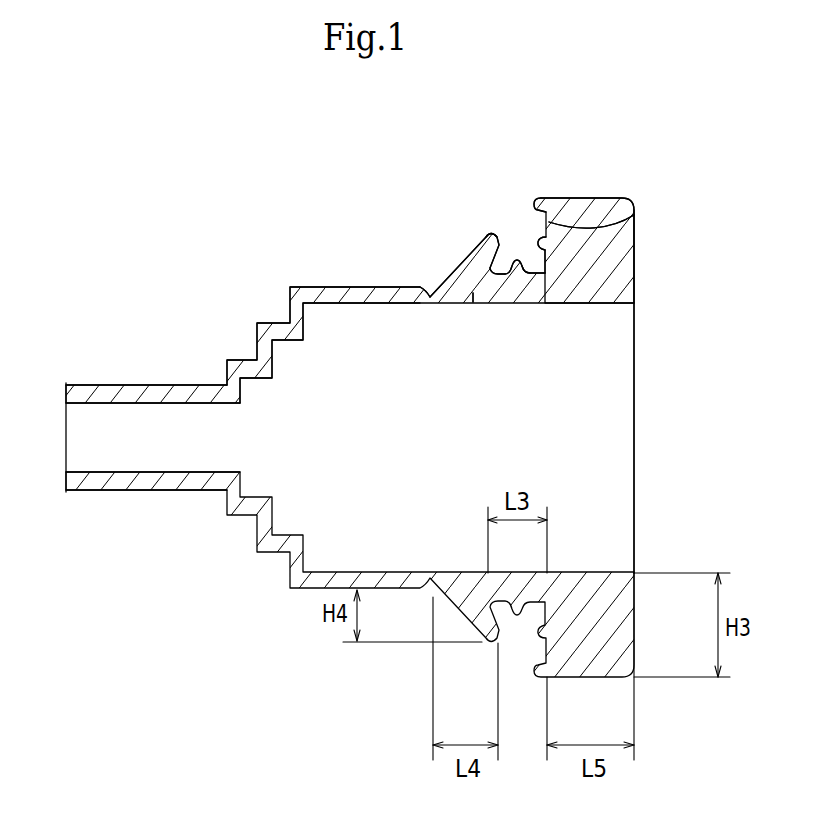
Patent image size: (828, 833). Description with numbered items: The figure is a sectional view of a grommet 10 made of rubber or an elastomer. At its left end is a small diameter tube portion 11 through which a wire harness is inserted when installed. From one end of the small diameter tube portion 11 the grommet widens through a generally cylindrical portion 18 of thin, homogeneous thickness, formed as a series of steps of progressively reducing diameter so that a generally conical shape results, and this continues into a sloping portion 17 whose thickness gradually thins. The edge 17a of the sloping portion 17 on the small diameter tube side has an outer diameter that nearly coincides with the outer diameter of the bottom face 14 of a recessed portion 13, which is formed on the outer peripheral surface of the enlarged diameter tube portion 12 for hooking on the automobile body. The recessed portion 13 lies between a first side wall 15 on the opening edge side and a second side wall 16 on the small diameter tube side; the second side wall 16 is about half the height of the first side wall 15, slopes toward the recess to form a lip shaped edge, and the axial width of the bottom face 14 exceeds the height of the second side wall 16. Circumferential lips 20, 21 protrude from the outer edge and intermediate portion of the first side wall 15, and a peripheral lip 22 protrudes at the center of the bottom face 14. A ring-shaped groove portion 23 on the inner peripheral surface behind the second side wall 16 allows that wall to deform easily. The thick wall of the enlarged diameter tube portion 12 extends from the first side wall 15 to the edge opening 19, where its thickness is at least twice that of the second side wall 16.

The grommet 10 is at (328, 216).
The small diameter tube portion 11 is at (164, 381).
The enlarged diameter tube portion 12 is at (594, 188).
The recessed portion 13 is at (517, 242).
The bottom face 14 is at (546, 262).
The first side wall 15 is at (634, 215).
The second side wall 16 is at (480, 236).
The sloping portion 17 is at (467, 253).
The edge of the sloping portion 17a is at (432, 293).
The cylindrical portion 18 is at (318, 285).
The edge opening 19 is at (636, 360).
The circumferential lip 20 is at (538, 197).
The circumferential lip 21 is at (549, 245).
The peripheral lip 22 is at (524, 269).
The ring-shaped groove portion 23 is at (472, 304).